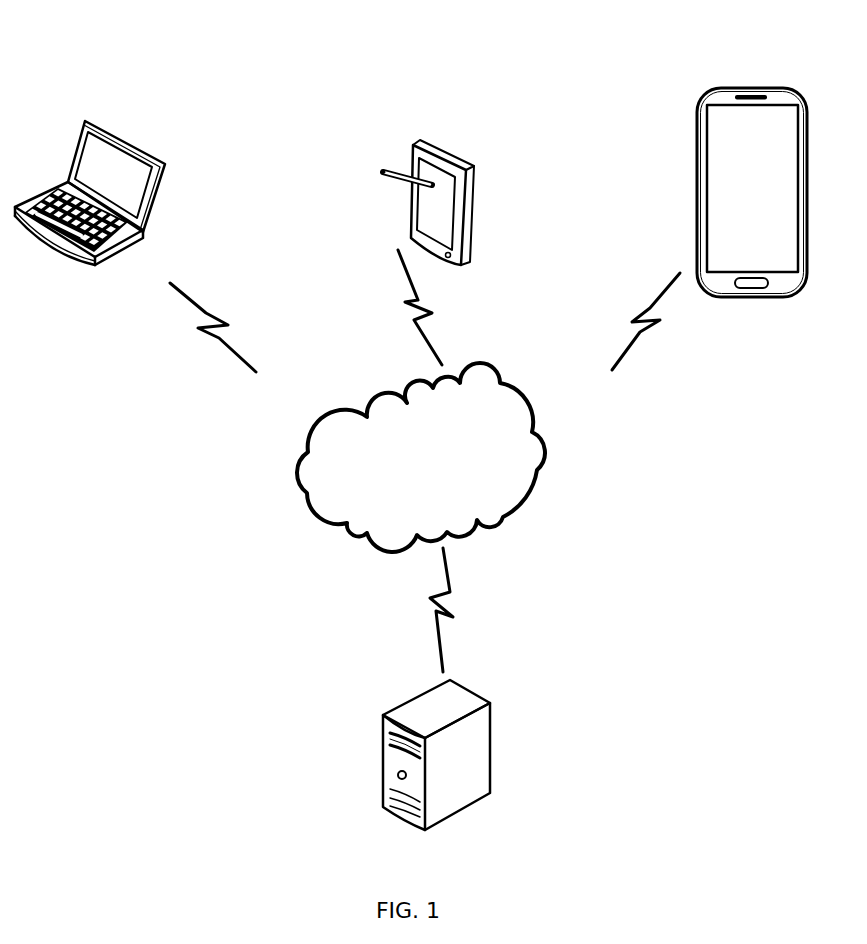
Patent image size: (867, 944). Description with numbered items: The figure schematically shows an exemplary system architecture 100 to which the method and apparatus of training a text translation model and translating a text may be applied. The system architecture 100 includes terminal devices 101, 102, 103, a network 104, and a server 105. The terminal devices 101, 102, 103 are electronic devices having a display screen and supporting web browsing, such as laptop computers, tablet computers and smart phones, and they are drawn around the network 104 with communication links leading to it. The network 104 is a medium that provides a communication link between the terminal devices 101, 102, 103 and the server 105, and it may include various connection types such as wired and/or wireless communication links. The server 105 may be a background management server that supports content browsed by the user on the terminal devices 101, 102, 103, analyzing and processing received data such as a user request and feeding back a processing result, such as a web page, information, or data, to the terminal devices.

The system architecture 100 is at (128, 54).
The terminal device 101 is at (90, 178).
The terminal device 102 is at (429, 183).
The terminal device 103 is at (752, 176).
The network 104 is at (421, 457).
The server 105 is at (437, 744).